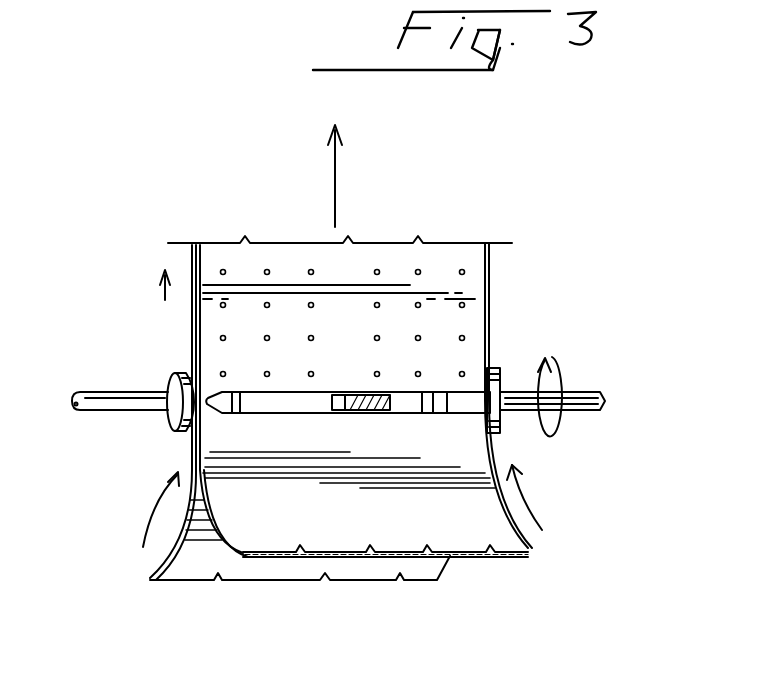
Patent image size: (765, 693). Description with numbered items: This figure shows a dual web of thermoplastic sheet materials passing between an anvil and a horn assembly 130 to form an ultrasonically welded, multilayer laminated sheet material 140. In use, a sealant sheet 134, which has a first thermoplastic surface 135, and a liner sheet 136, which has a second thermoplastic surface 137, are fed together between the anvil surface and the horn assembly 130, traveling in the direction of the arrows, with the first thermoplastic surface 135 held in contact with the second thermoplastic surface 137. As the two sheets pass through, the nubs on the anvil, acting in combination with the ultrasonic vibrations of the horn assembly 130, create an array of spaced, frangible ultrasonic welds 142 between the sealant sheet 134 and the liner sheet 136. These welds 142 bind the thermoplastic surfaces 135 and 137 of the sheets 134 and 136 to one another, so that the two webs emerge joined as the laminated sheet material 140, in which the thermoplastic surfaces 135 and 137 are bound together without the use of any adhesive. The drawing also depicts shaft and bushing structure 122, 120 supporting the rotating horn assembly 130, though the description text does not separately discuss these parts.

The bushing 120 is at (170, 430).
The shaft 122 is at (75, 412).
The horn assembly 130 is at (481, 396).
The sealant sheet 134 is at (150, 568).
The first thermoplastic surface 135 is at (190, 580).
The liner sheet 136 is at (530, 546).
The second thermoplastic surface 137 is at (495, 562).
The laminated sheet material 140 is at (500, 331).
The frangible ultrasonic welds 142 is at (462, 302).